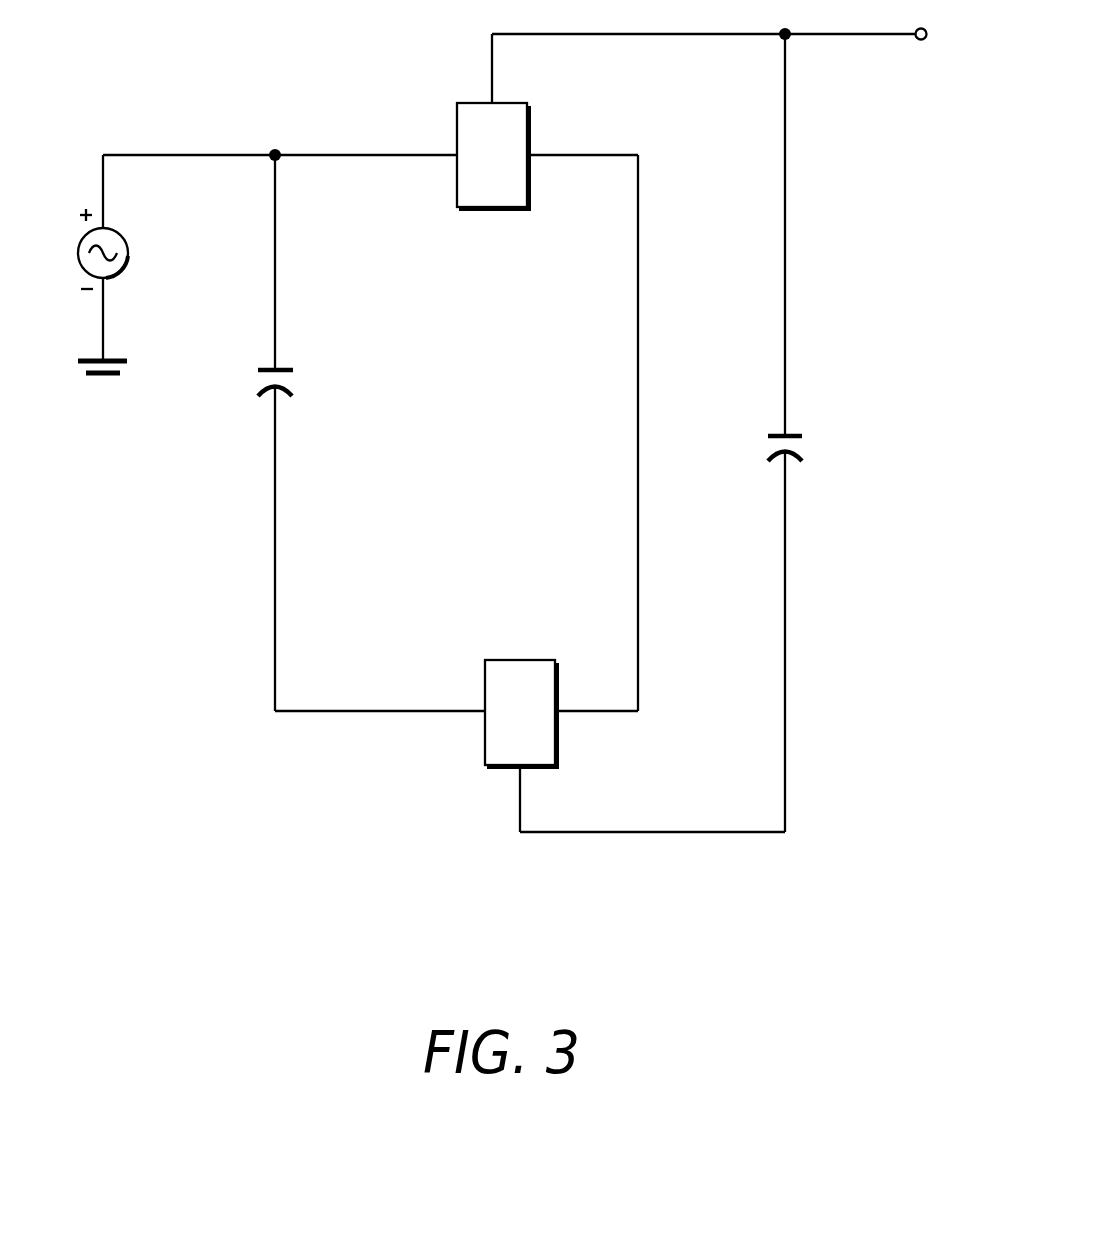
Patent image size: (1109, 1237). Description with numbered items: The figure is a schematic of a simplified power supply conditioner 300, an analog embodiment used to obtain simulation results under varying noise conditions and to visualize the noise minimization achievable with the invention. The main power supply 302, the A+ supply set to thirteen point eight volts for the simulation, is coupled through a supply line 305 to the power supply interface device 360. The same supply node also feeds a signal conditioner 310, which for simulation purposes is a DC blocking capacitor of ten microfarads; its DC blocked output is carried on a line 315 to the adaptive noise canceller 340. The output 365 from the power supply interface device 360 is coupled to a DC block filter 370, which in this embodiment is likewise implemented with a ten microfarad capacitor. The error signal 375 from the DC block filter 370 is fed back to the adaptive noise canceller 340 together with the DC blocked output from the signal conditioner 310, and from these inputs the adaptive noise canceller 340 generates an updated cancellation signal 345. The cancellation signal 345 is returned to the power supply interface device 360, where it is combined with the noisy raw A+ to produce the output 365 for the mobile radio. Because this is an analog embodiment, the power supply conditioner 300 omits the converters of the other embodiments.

The power supply conditioner 300 is at (930, 938).
The main power supply 302 is at (120, 232).
The input wire 305 is at (337, 153).
The signal conditioner 310 is at (278, 365).
The conditioned signal wire 315 is at (276, 549).
The adaptive noise canceller 340 is at (543, 659).
The cancellation signal 345 is at (639, 363).
The power supply interface device 360 is at (515, 102).
The output 365 is at (652, 33).
The DC block filter 370 is at (795, 433).
The error signal 375 is at (786, 640).